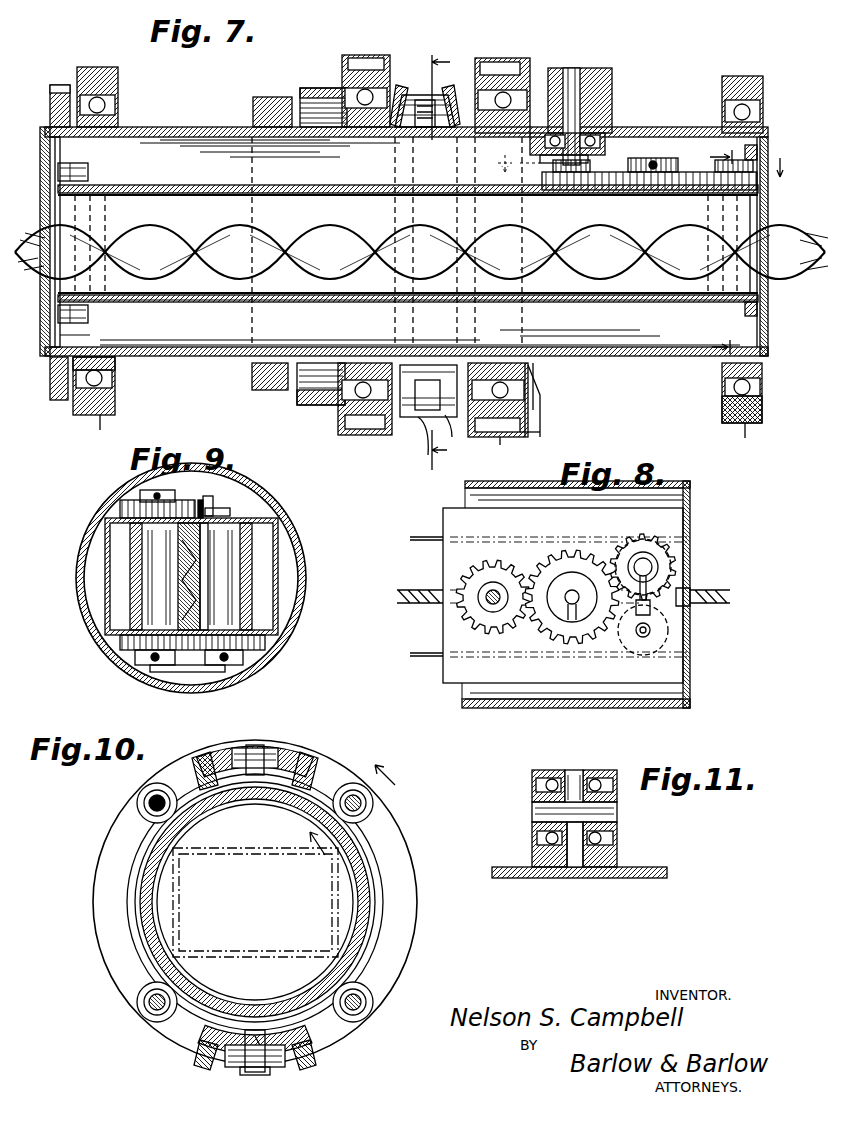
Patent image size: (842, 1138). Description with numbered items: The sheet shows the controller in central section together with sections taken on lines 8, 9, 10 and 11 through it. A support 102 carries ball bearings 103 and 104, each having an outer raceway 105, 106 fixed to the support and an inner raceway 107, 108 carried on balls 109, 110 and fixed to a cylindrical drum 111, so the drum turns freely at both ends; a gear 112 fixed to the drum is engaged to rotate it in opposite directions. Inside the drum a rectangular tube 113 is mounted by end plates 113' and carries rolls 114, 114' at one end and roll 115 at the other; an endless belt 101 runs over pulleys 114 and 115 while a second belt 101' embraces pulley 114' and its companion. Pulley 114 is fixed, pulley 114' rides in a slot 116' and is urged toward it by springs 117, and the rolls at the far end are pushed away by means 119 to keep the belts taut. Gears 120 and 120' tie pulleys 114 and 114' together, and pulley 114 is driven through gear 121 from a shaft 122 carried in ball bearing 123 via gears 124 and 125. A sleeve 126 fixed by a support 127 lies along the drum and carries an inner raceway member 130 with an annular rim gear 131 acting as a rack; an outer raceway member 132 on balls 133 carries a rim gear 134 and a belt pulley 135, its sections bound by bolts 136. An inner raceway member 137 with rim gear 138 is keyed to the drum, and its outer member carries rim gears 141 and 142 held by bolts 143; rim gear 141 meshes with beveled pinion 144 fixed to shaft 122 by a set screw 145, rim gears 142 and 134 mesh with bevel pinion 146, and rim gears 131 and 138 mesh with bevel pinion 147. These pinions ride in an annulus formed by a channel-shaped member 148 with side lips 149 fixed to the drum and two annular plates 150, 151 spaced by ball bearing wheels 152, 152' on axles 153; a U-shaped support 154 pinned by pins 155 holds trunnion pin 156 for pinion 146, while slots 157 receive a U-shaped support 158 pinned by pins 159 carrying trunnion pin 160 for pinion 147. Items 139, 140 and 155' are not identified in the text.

In FIG. 7, the section line 10- 10 is at (433, 263).
In FIG. 10, the section line 11- 11 is at (350, 817).
In FIG. 7, the section line 8- 8 is at (632, 158).
In FIG. 7, the section line 9- 9 is at (713, 253).
In FIG. 7, the endless belt 101 is at (421, 221).
In FIG. 9, the endless belt 101 is at (116, 576).
In FIG. 8, the endless belt 101 is at (563, 594).
In FIG. 9, the endless belt 101' is at (278, 576).
In FIG. 7, the support 102 is at (431, 435).
In FIG. 7, the ball bearing 103 is at (127, 101).
In FIG. 7, the ball bearing 104 is at (712, 109).
In FIG. 7, the outer raceway 105 is at (115, 395).
In FIG. 7, the outer raceway 106 is at (722, 410).
In FIG. 7, the inner raceway 107 is at (115, 368).
In FIG. 7, the inner raceway 108 is at (722, 385).
In FIG. 7, the balls 109 is at (103, 379).
In FIG. 7, the balls 110 is at (750, 387).
In FIG. 7, the cylindrical drum 111 is at (160, 130).
In FIG. 9, the cylindrical drum 111 is at (272, 515).
In FIG. 11, the cylindrical drum 111 is at (645, 878).
In FIG. 7, the gear 112 is at (48, 108).
In FIG. 7, the rectangular tube 113 is at (430, 323).
In FIG. 9, the rectangular tube 113 is at (222, 576).
In FIG. 10, the rectangular tube 113 is at (255, 902).
In FIG. 7, the end plates 113' is at (40, 372).
In FIG. 7, the roll 114 is at (776, 242).
In FIG. 9, the roll 114 is at (104, 576).
In FIG. 9, the roll 114' is at (278, 576).
In FIG. 7, the roll 115 is at (118, 193).
In FIG. 9, the slot 116' is at (249, 493).
In FIG. 9, the springs 117 is at (210, 500).
In FIG. 7, the means 119 is at (70, 164).
In FIG. 9, the gear 120 is at (168, 670).
In FIG. 9, the gear 120' is at (260, 666).
In FIG. 7, the gear 121 is at (708, 190).
In FIG. 9, the gear 121 is at (125, 505).
In FIG. 8, the gear 121 is at (650, 530).
In FIG. 7, the shaft 122 is at (565, 115).
In FIG. 7, the ball bearing 123 is at (585, 135).
In FIG. 7, the gear 124 is at (572, 190).
In FIG. 8, the gear 124 is at (495, 560).
In FIG. 7, the gear 125 is at (632, 190).
In FIG. 8, the gear 125 is at (570, 562).
In FIG. 7, the sleeve 126 is at (253, 125).
In FIG. 7, the support 127 is at (252, 388).
In FIG. 7, the inner annular raceway member 130 is at (322, 402).
In FIG. 7, the annular rim gear 131 is at (410, 420).
In FIG. 7, the outer raceway member 132 is at (362, 435).
In FIG. 7, the balls 133 is at (355, 405).
In FIG. 7, the rim gear 134 is at (397, 84).
In FIG. 7, the belt pulley 135 is at (318, 88).
In FIG. 7, the bolts 136 is at (358, 58).
In FIG. 7, the inner raceway member 137 is at (528, 377).
In FIG. 7, the rim gear 138 is at (452, 428).
In FIG. 7, the pin 139 is at (530, 422).
In FIG. 7, the link 140 is at (530, 390).
In FIG. 7, the rim gear 141 is at (535, 405).
In FIG. 7, the rim gear 142 is at (462, 90).
In FIG. 7, the bolts 143 is at (508, 437).
In FIG. 7, the beveled pinion 144 is at (600, 88).
In FIG. 7, the set screw 145 is at (575, 75).
In FIG. 7, the bevel pinion 146 is at (425, 455).
In FIG. 10, the bevel pinion 146 is at (272, 1073).
In FIG. 7, the bevel pinion 147 is at (418, 100).
In FIG. 10, the bevel pinion 147 is at (295, 760).
In FIG. 11, the channel-shaped member 148 is at (568, 868).
In FIG. 11, the side lips 149 is at (532, 850).
In FIG. 10, the annular plate 150 is at (410, 920).
In FIG. 11, the annular plate 150 is at (617, 792).
In FIG. 11, the annular plate 151 is at (532, 790).
In FIG. 10, the ball bearing wheel 152 is at (289, 902).
In FIG. 11, the ball bearing wheel 152 is at (614, 766).
In FIG. 11, the ball bearing wheel 152' is at (551, 767).
In FIG. 11, the axle 153 is at (574, 800).
In FIG. 10, the U-shaped support 154 is at (205, 1038).
In FIG. 10, the pins 155 is at (273, 1064).
In FIG. 10, the side block 155' is at (294, 1061).
In FIG. 10, the trunnion pin 156 is at (255, 1032).
In FIG. 10, the slot 157 is at (228, 755).
In FIG. 10, the U-shaped support 158 is at (322, 782).
In FIG. 10, the pins 159 is at (298, 775).
In FIG. 10, the trunnion pin 160 is at (262, 748).